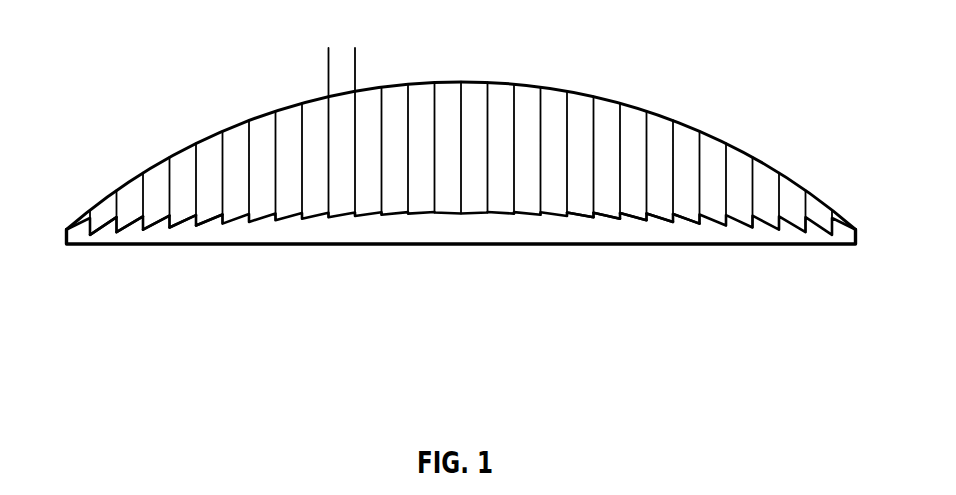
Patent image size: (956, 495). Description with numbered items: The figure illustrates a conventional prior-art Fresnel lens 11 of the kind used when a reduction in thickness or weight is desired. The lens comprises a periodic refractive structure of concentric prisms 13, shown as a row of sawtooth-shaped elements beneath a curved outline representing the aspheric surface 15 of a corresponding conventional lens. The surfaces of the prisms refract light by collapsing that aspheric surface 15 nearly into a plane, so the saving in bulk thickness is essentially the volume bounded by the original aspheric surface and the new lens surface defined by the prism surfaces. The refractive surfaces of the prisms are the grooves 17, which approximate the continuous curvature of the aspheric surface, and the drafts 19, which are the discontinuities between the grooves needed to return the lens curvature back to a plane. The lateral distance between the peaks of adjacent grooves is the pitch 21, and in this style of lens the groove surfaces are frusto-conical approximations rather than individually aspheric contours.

The Fresnel lens 11 is at (458, 159).
The concentric prisms 13 is at (493, 215).
The aspheric surface 15 is at (475, 156).
The grooves 17 is at (687, 220).
The drafts 19 is at (215, 217).
The pitch 21 is at (257, 58).